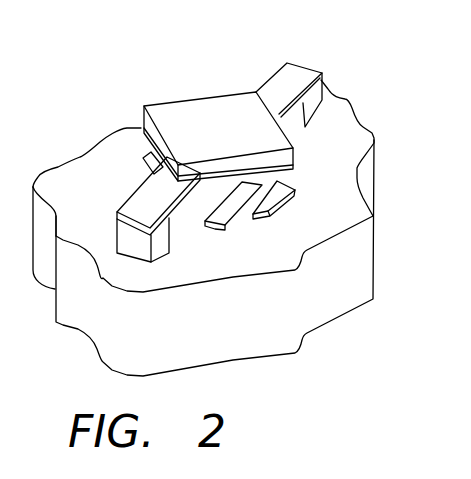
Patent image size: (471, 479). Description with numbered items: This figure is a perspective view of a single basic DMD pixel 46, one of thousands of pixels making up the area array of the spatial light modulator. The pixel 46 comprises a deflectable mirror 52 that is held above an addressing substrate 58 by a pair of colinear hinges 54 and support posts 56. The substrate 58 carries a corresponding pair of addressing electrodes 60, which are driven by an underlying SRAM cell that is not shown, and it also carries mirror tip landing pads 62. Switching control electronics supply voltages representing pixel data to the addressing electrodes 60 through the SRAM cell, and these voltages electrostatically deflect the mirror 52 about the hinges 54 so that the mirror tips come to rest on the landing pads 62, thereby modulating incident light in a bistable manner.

The DMD pixel 46 is at (157, 51).
The deflectable mirror 52 is at (232, 139).
The colinear hinges 54 is at (278, 82).
The support posts 56 is at (315, 103).
The addressing substrate 58 is at (270, 331).
The addressing electrodes 60 is at (208, 222).
The mirror tip landing pads 62 is at (142, 160).